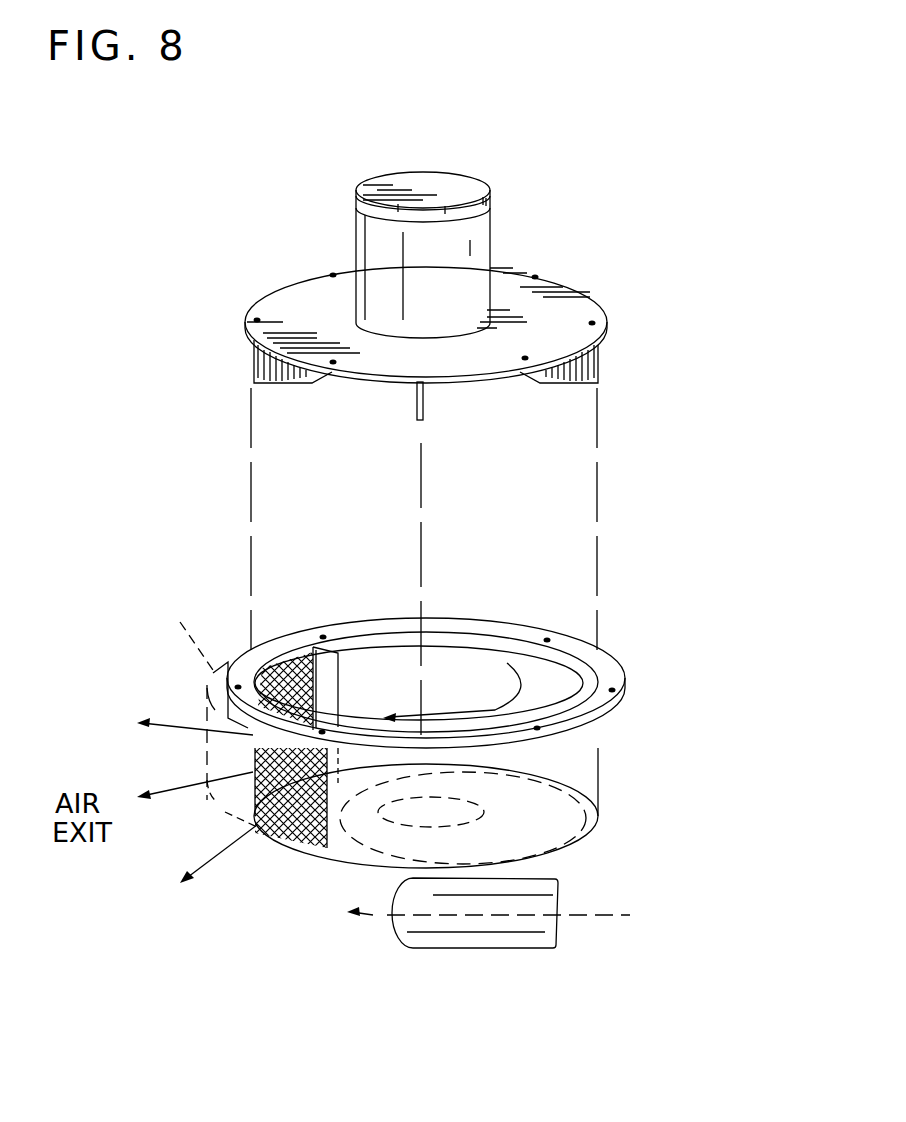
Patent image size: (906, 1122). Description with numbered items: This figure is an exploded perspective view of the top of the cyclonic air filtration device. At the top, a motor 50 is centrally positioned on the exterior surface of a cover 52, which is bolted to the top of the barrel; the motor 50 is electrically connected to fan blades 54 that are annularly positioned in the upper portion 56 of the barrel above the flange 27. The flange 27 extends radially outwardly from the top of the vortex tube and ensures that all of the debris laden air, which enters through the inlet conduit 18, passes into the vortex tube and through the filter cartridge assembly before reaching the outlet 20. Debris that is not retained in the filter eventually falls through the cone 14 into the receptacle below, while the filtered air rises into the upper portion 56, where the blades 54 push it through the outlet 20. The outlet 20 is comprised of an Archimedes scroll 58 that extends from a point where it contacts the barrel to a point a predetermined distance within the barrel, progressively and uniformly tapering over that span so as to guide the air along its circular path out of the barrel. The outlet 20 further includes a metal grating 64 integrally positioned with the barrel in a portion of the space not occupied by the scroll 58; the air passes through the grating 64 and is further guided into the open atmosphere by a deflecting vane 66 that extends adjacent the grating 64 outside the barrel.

The cone 14 is at (592, 795).
The inlet conduit 18 is at (545, 928).
The outlet 20 is at (178, 682).
The flange 27 is at (552, 792).
The motor 50 is at (355, 197).
The cover 52 is at (293, 302).
The fan blades 54 is at (253, 370).
The upper portion 56 is at (548, 687).
The Archimedes scroll 58 is at (375, 648).
The metal grating 64 is at (297, 677).
The deflecting vane 66 is at (205, 713).